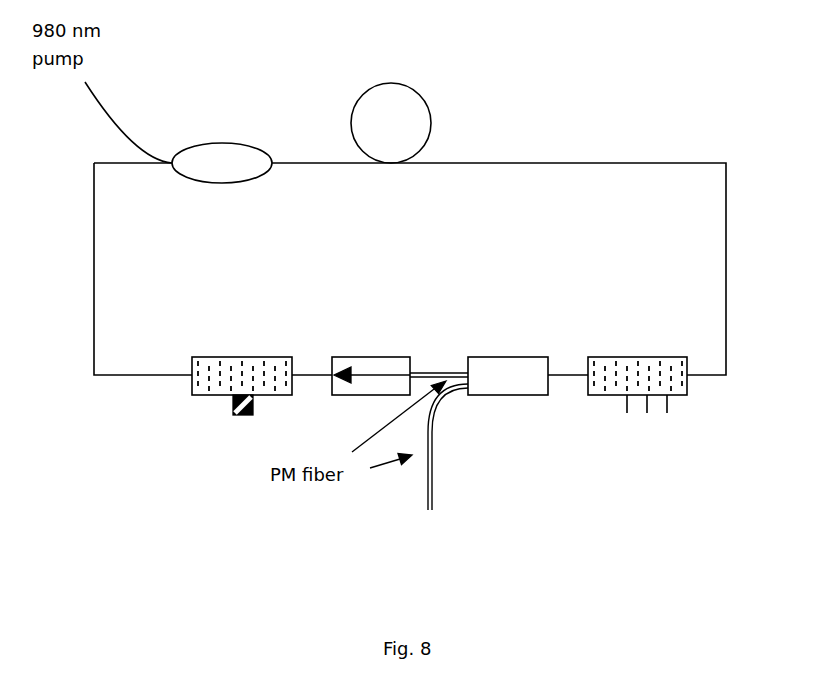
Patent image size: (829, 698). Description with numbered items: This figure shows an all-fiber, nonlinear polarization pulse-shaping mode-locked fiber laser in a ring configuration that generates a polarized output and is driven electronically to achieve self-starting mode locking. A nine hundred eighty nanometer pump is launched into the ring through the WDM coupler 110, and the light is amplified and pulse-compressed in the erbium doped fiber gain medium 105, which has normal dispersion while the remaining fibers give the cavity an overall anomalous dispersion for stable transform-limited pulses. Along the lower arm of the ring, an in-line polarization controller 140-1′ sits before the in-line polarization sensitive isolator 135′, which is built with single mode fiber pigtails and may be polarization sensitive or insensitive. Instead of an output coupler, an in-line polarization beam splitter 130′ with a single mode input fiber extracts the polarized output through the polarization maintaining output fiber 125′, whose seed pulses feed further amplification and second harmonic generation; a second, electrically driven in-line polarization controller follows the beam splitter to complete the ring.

The 980/1550 WDM coupler 110 is at (212, 155).
The gain medium (EDF) 105 is at (400, 110).
The in-line polarization controller 140-1′ is at (198, 362).
The in-line polarization sensitive isolator 135′ is at (363, 368).
The in-line beam splitter 130′ is at (502, 367).
The PM output fiber 125′ is at (433, 480).